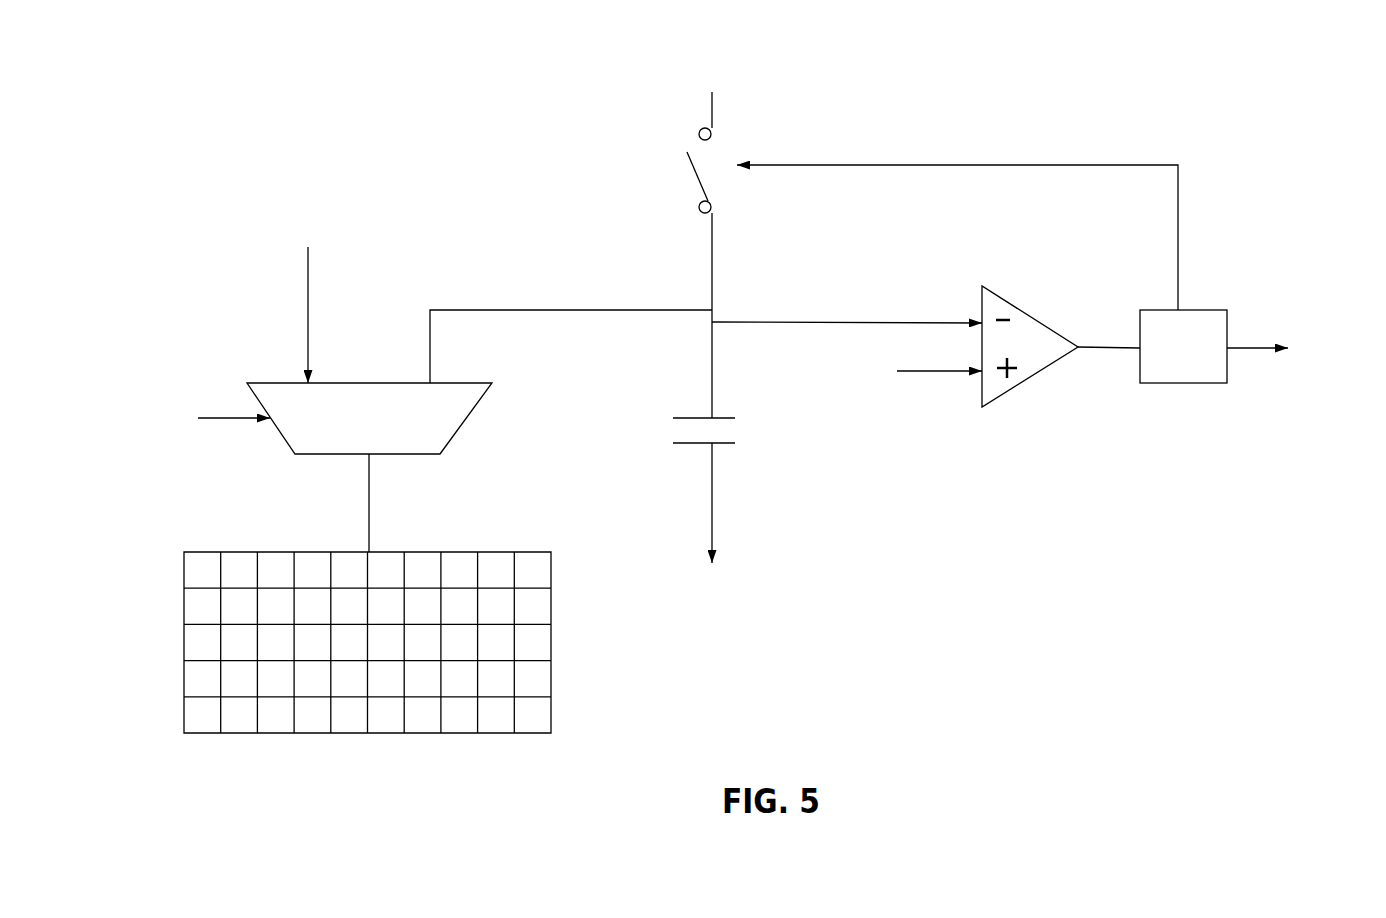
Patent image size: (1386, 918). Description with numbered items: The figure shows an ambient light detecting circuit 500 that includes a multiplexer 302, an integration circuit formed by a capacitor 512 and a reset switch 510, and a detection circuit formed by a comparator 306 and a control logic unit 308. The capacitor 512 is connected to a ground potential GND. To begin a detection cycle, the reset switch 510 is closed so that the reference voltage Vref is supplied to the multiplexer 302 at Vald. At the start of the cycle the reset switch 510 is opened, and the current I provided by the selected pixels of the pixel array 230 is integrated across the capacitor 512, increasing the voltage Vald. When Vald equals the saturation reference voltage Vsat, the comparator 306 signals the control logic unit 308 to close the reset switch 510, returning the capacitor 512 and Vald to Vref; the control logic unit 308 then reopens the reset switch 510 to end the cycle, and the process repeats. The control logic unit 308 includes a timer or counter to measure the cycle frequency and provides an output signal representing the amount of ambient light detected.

The ambient light detecting circuit 500 is at (442, 108).
The multiplexer 302 is at (369, 418).
The pixel array 230 is at (294, 552).
The reset switch 510 is at (700, 129).
The capacitor 512 is at (675, 418).
The comparator 306 is at (1005, 395).
The control logic unit 308 is at (1183, 346).